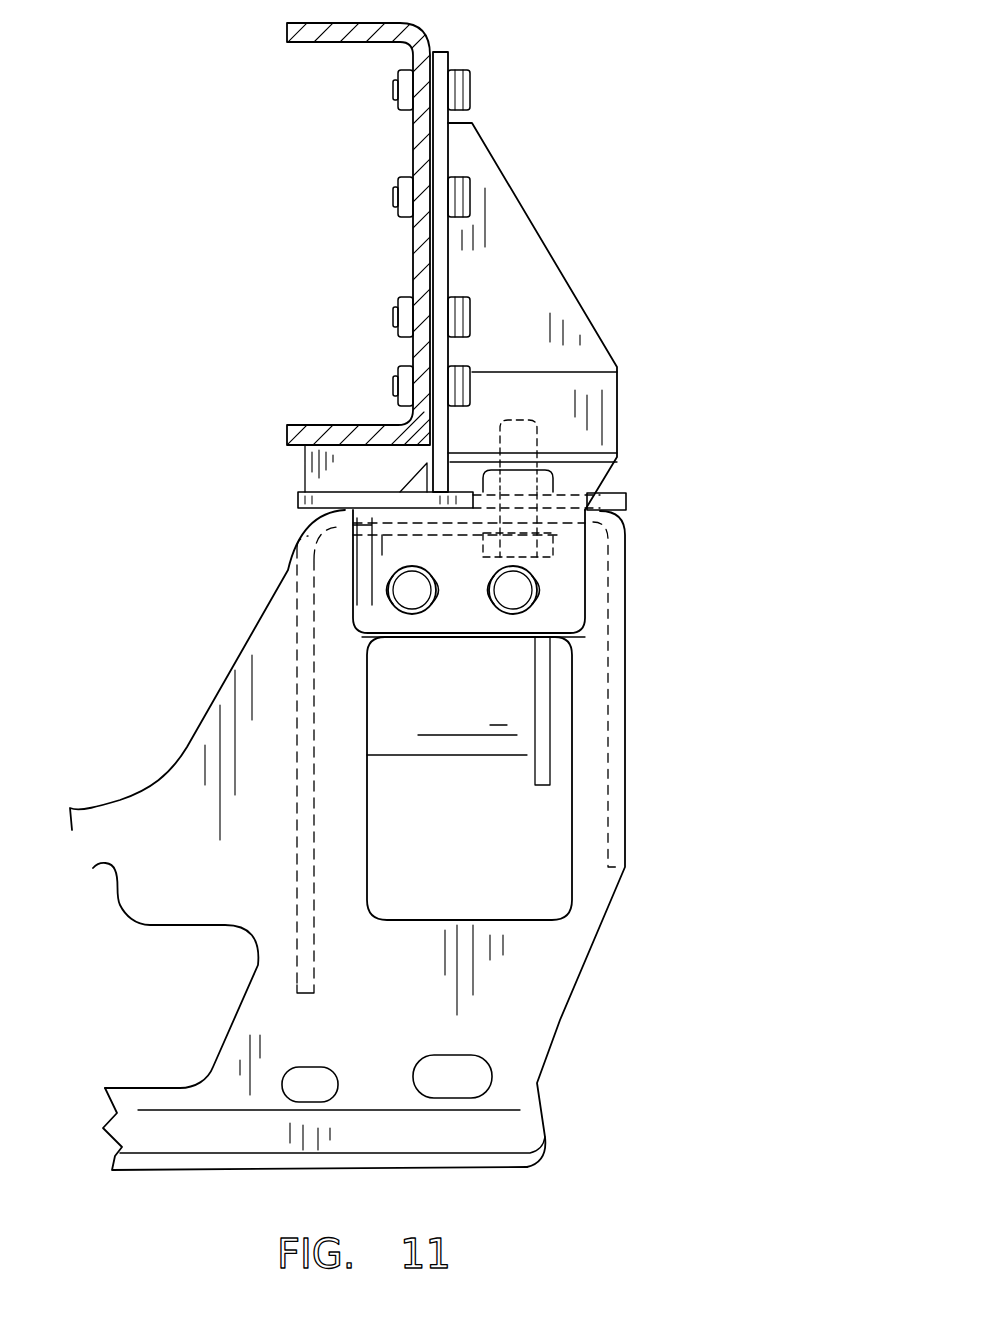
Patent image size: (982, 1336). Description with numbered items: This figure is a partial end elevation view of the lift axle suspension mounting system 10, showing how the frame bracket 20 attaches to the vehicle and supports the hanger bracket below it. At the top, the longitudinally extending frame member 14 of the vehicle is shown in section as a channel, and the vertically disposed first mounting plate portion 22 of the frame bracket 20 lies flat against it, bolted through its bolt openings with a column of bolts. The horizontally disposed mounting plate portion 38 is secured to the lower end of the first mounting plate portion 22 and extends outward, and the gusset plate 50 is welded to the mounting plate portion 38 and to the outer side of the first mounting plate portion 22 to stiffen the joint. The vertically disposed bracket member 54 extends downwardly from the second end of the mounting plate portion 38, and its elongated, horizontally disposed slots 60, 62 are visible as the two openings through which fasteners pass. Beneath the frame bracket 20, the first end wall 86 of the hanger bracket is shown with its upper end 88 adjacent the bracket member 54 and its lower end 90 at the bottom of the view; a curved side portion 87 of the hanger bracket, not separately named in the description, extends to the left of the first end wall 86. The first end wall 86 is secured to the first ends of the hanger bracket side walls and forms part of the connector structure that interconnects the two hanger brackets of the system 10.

The lift axle suspension mounting system 10 is at (701, 482).
The frame member 14 is at (383, 33).
The frame bracket 20 is at (452, 157).
The first mounting plate portion 22 is at (452, 268).
The mounting plate portion 38 is at (296, 502).
The gusset plate 50 is at (593, 345).
The bracket member 54 is at (584, 581).
The slot 60 is at (545, 606).
The slot 62 is at (445, 606).
The first end wall 86 is at (584, 834).
The side wall 87 is at (139, 792).
The upper end 88 is at (627, 511).
The lower end 90 is at (525, 1166).